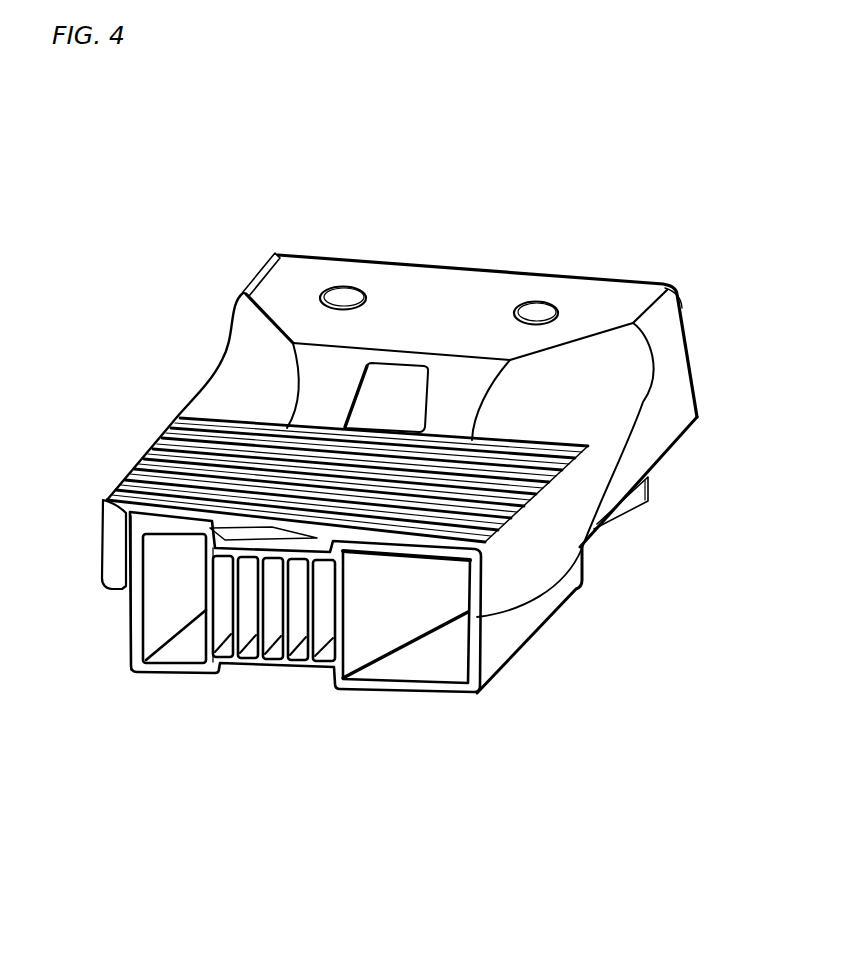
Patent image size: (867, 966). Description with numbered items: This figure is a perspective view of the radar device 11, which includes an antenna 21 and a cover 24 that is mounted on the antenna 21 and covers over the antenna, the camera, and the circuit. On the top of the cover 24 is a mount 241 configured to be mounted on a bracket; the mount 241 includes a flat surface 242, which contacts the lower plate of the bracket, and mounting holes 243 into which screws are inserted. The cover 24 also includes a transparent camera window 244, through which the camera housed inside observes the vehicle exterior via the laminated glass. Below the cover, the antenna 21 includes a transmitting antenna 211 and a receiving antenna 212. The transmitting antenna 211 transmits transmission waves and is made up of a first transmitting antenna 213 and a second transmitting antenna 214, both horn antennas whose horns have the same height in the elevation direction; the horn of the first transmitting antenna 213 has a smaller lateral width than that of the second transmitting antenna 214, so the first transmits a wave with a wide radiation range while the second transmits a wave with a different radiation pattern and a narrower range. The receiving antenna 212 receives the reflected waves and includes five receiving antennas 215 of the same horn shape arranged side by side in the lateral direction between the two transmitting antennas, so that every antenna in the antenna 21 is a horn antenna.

The radar device 11 is at (212, 180).
The antenna 21 is at (267, 847).
The cover 24 is at (273, 218).
The transmitting antenna 211 is at (432, 777).
The receiving antenna 212 is at (293, 753).
The first transmitting antenna 213 is at (180, 655).
The second transmitting antenna 214 is at (402, 670).
The receiving antennas 215 is at (274, 748).
The mount 241 is at (588, 147).
The flat surface 242 is at (443, 295).
The mounting holes 243 is at (349, 298).
The camera window 244 is at (367, 398).